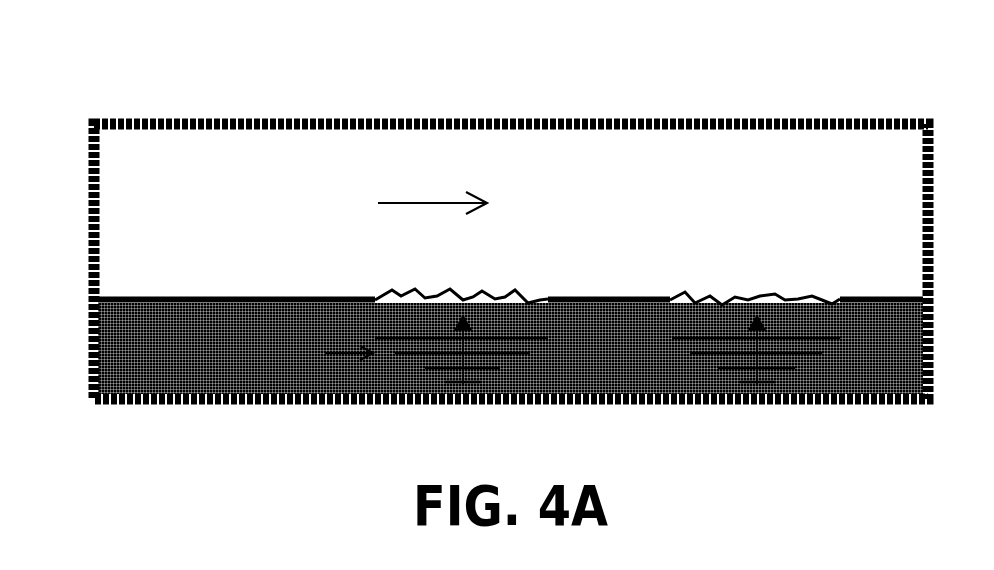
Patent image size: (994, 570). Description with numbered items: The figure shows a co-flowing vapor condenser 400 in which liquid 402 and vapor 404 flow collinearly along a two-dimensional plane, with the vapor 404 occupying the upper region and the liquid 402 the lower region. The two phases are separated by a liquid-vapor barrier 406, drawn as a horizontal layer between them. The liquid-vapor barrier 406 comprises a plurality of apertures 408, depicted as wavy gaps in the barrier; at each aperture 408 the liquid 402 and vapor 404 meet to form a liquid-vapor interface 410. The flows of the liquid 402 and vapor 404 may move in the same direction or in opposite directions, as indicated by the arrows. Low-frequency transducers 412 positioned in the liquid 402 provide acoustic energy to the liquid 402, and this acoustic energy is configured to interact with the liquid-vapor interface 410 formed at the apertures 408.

The co-flowing vapor condenser 400 is at (159, 51).
The liquid 402 is at (222, 370).
The vapor 404 is at (302, 160).
The liquid-vapor barrier 406 is at (133, 295).
The aperture 408 is at (499, 275).
The liquid-vapor interface 410 is at (780, 298).
The low-frequency transducer 412 is at (753, 380).